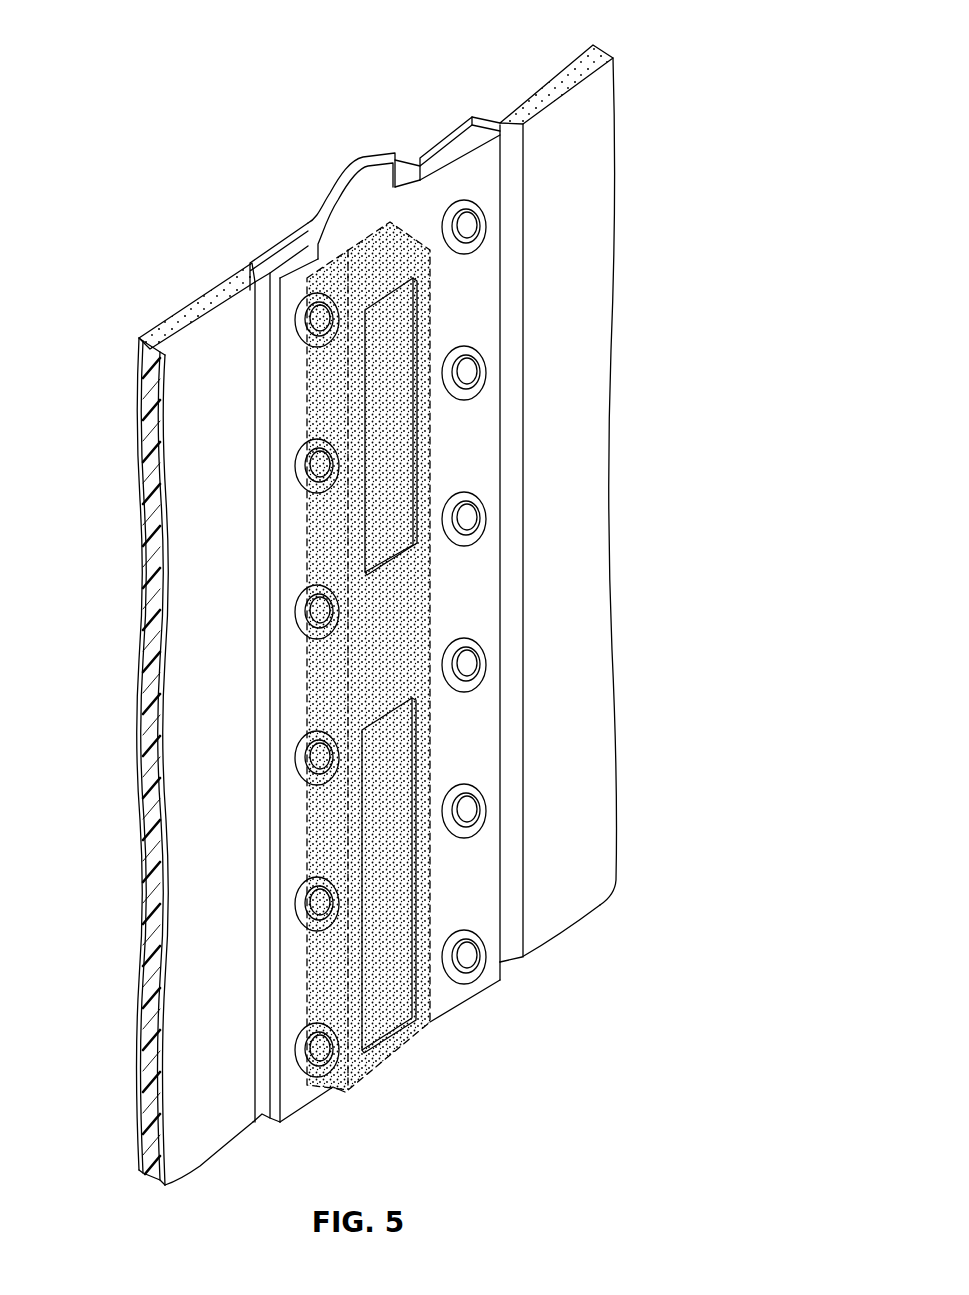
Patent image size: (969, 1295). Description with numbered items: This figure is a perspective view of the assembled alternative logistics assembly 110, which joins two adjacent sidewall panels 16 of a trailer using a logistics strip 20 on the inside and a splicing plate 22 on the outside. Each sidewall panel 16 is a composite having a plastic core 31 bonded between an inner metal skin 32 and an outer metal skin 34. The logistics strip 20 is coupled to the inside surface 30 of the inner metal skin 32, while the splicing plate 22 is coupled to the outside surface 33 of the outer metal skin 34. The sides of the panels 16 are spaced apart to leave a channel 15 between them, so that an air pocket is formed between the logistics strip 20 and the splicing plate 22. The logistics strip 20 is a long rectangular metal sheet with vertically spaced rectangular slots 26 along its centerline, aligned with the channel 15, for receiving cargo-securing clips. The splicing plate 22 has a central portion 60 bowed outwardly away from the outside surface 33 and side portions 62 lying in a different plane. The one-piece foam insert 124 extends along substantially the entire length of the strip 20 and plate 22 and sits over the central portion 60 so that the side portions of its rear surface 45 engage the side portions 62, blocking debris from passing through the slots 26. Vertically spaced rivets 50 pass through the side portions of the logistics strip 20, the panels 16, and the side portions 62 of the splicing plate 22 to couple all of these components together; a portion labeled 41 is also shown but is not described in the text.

The channel 15 is at (368, 157).
The sidewall panel 16 is at (630, 185).
The logistics strip 20 is at (266, 472).
The splicing plate 22 is at (322, 168).
The slot 26 is at (400, 440).
The inside surface 30 is at (579, 789).
The plastic core 31 is at (590, 65).
The inner metal skin 32 is at (593, 302).
The outside surface 33 is at (143, 720).
The outer metal skin 34 is at (143, 805).
The stiffener strip 41 is at (318, 232).
The rear surface 45 is at (313, 270).
The rivet 50 is at (470, 963).
The central portion 60 is at (355, 180).
The side portion 62 is at (257, 262).
The logistics assembly 110 is at (422, 125).
The insert 124 is at (404, 630).